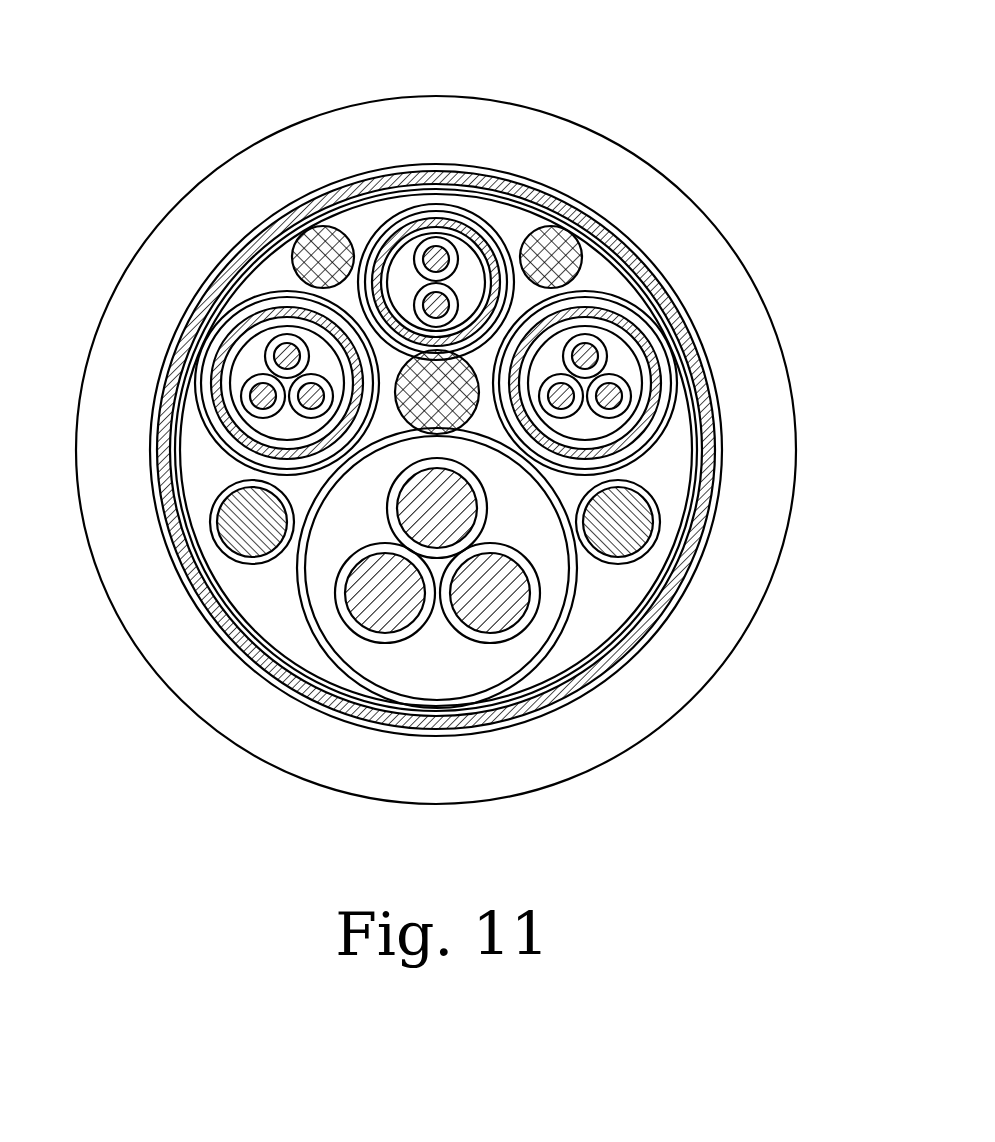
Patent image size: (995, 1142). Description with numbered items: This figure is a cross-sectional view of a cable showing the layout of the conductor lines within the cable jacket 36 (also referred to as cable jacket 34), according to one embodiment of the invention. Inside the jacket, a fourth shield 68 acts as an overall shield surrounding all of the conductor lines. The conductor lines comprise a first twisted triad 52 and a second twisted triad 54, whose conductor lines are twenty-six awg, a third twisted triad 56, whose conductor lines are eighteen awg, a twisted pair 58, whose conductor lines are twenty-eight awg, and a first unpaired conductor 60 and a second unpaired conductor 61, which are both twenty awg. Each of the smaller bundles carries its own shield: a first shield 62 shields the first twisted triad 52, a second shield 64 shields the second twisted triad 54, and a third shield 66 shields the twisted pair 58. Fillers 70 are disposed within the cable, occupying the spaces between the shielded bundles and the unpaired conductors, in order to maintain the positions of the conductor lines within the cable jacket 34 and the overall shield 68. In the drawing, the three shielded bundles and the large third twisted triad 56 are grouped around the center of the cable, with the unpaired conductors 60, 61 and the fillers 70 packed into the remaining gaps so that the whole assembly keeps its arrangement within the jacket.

The cable jacket 34 is at (746, 60).
The cable jacket 36 is at (306, 136).
The fourth shield 68 is at (622, 238).
The first twisted triad 52 is at (192, 397).
The third shield 66 is at (403, 222).
The twisted pair 58 is at (463, 272).
The first shield 62 is at (258, 325).
The second twisted triad 54 is at (623, 293).
The second shield 64 is at (660, 416).
The fillers 70 is at (293, 240).
The second unpaired conductor 61 is at (232, 512).
The first unpaired conductor 60 is at (640, 528).
The third twisted triad 56 is at (540, 655).